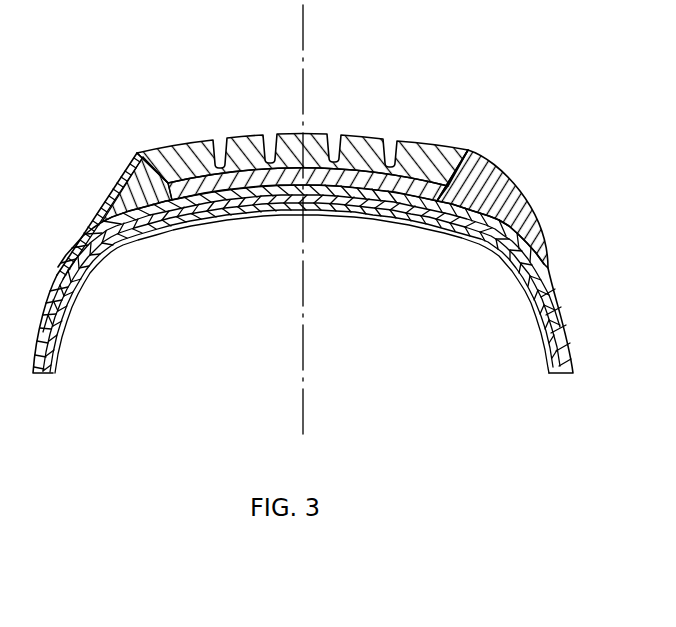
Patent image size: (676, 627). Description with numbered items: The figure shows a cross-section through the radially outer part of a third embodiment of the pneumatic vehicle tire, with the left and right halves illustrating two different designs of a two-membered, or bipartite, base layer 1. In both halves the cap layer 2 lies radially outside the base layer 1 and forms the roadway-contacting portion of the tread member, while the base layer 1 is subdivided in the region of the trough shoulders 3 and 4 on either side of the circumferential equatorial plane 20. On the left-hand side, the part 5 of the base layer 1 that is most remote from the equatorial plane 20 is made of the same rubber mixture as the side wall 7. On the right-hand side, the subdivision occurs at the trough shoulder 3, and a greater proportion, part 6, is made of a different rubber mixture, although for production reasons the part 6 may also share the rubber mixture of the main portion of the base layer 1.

The base layer 1 is at (430, 187).
The cap layer 2 is at (405, 140).
The trough shoulder 3 is at (470, 148).
The trough shoulder 4 is at (137, 151).
The part of the base layer 5 is at (82, 230).
The part of the base layer 6 is at (507, 213).
The side wall 7 is at (40, 345).
The circumferential equatorial plane 20 is at (305, 327).